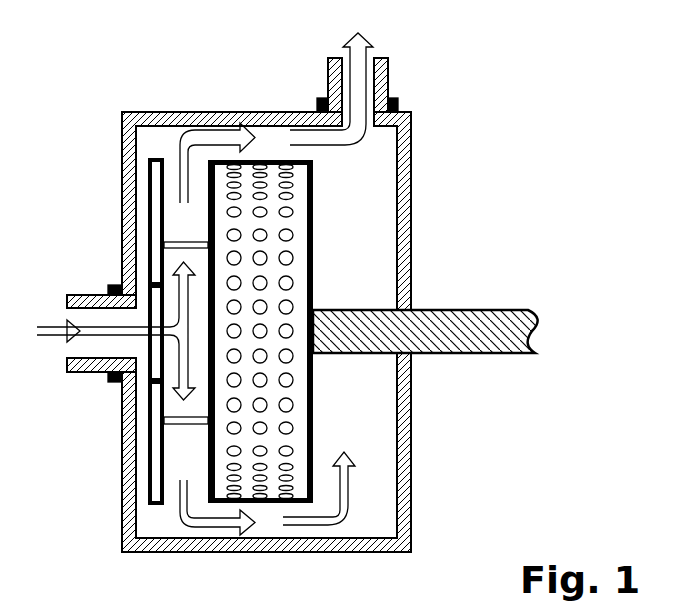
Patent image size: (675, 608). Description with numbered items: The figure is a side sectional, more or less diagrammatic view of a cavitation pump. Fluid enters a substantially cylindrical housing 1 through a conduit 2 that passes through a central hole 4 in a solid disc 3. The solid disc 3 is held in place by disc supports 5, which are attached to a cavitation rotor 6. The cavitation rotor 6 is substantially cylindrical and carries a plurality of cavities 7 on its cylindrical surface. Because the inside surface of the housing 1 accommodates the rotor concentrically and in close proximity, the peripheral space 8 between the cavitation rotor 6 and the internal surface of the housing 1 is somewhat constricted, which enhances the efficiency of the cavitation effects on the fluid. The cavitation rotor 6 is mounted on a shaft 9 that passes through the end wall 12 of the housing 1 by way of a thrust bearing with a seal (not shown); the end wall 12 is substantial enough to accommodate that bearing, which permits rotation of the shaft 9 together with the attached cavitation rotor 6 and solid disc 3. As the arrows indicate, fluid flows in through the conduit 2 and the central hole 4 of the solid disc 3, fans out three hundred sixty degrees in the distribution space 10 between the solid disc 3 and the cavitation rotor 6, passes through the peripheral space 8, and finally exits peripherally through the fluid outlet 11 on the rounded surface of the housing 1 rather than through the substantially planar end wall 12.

The housing 1 is at (190, 112).
The conduit 2 is at (97, 295).
The solid disc 3 is at (150, 255).
The central hole 4 is at (157, 354).
The disc supports 5 is at (195, 240).
The cavitation rotor 6 is at (313, 292).
The cavities 7 is at (258, 258).
The peripheral space 8 is at (280, 145).
The shaft 9 is at (462, 310).
The distribution space 10 is at (185, 433).
The fluid outlet 11 is at (388, 80).
The end wall 12 is at (410, 435).